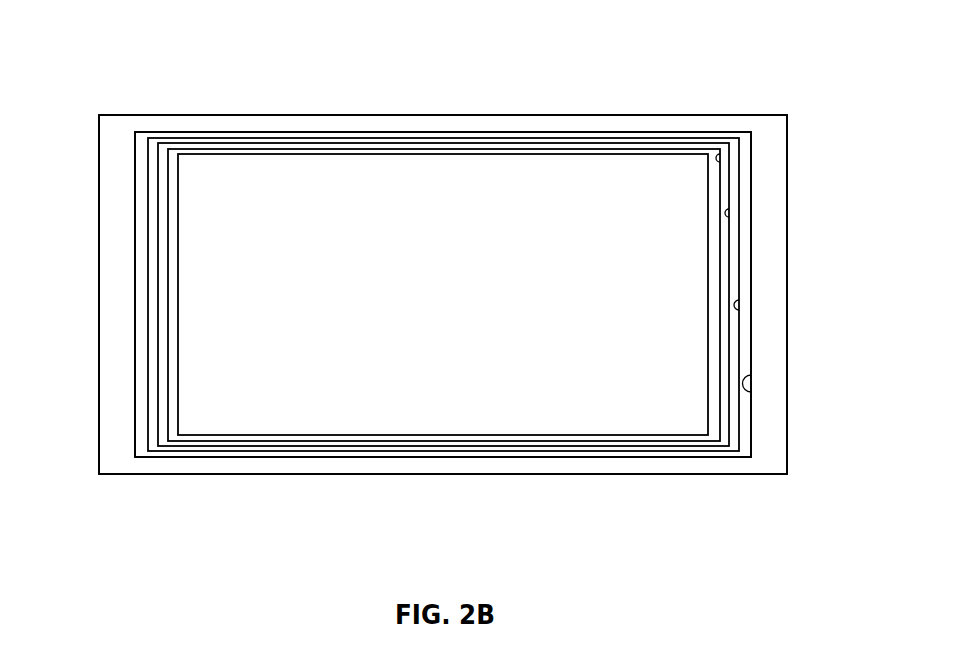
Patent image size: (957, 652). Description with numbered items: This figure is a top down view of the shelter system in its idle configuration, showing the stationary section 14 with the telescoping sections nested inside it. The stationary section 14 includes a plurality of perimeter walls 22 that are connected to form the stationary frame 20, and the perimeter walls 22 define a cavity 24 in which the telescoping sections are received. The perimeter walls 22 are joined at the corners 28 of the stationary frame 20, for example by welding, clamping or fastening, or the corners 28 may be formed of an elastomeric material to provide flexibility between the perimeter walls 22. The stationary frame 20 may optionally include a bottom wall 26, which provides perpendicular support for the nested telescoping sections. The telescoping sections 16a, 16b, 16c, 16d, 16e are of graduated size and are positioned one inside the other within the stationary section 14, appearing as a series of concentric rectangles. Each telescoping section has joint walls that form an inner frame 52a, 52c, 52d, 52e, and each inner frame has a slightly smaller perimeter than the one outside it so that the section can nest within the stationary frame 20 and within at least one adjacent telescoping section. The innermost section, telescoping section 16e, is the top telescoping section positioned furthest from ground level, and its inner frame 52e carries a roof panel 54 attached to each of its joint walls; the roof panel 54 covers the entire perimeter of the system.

The stationary section 14 is at (643, 115).
The telescoping section 16a is at (747, 345).
The telescoping section 16b is at (733, 273).
The telescoping section 16c is at (723, 252).
The telescoping section 16d is at (713, 192).
The top telescoping section 16e is at (655, 180).
The stationary frame 20 is at (98, 223).
The perimeter walls 22 is at (293, 115).
The cavity 24 is at (203, 355).
The bottom wall 26 is at (635, 385).
The corners 28 is at (138, 62).
The inner frame 52a is at (751, 392).
The inner frame 52c is at (741, 310).
The inner frame 52d is at (722, 163).
The inner frame 52e is at (520, 200).
The roof panel 54 is at (385, 215).